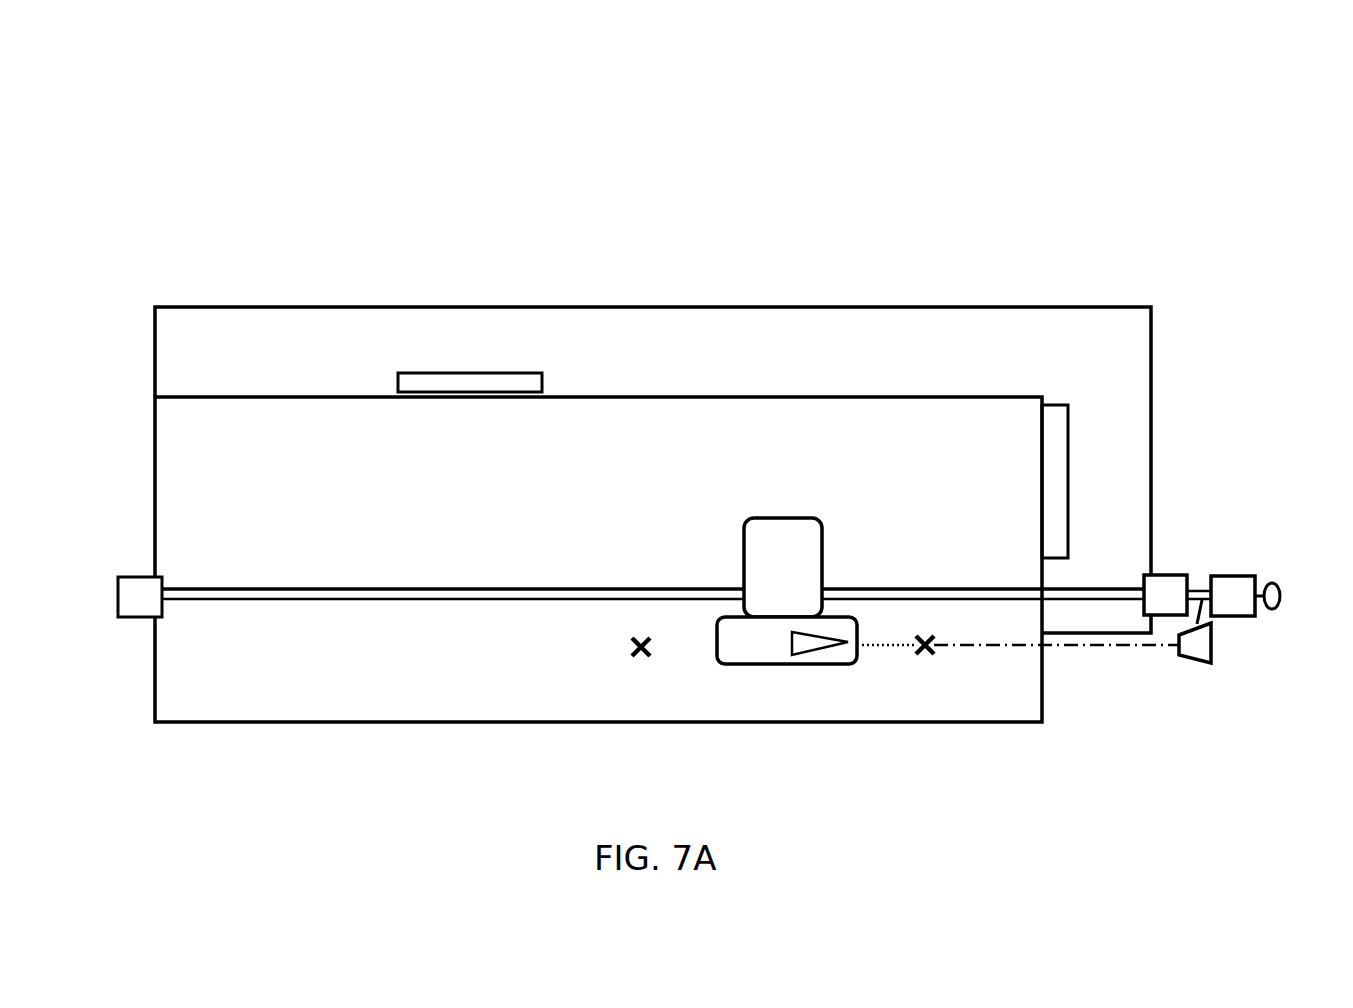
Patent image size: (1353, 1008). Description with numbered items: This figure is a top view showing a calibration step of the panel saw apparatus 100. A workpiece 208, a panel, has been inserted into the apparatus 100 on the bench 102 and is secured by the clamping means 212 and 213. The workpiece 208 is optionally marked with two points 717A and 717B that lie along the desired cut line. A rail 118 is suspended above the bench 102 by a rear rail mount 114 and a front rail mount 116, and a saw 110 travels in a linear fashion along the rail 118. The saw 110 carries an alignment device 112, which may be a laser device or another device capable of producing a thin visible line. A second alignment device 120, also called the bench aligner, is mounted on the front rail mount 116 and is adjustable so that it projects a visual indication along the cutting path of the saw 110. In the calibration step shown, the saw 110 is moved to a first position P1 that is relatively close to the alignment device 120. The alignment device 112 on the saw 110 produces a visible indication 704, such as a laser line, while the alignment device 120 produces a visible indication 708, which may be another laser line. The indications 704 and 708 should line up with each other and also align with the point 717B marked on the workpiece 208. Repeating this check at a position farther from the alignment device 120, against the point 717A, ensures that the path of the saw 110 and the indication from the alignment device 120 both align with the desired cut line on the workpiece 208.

The panel saw apparatus 100 is at (383, 136).
The bench 102 is at (680, 333).
The workpiece 208 is at (378, 397).
The clamping means 213 is at (493, 372).
The clamping means 212 is at (1056, 410).
The rail 118 is at (563, 587).
The rear rail mount 114 is at (130, 580).
The saw 110 is at (833, 556).
The alignment device 112 is at (800, 650).
The front rail mount 116 is at (1262, 536).
The second alignment device 120 is at (1213, 640).
The point 717A is at (630, 647).
The point 717B is at (925, 656).
The visible indication 704 is at (887, 655).
The visible indication 708 is at (1075, 648).
The first position P1 is at (813, 685).